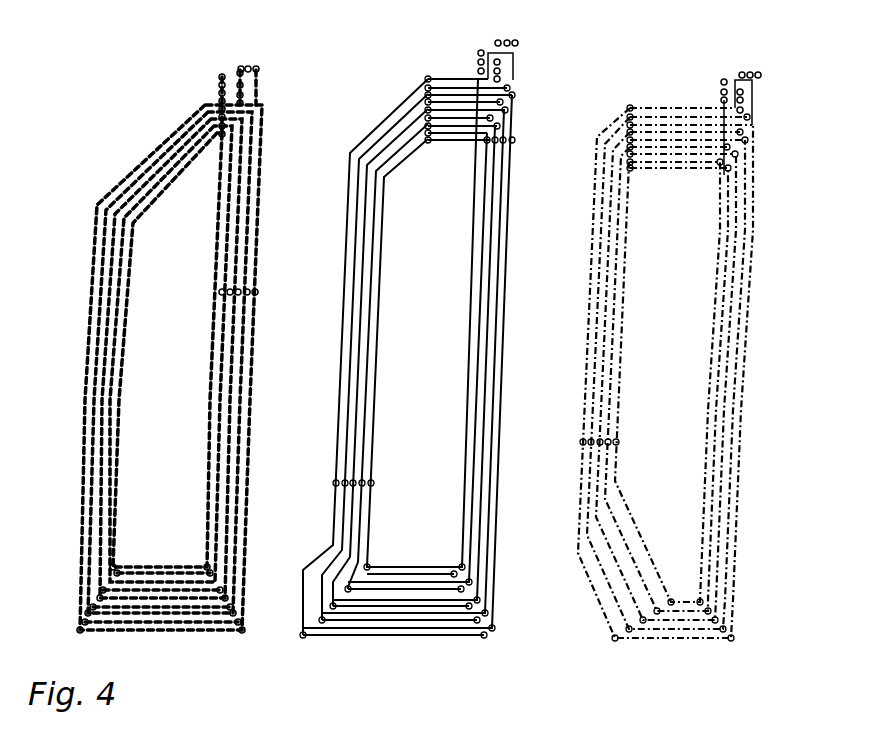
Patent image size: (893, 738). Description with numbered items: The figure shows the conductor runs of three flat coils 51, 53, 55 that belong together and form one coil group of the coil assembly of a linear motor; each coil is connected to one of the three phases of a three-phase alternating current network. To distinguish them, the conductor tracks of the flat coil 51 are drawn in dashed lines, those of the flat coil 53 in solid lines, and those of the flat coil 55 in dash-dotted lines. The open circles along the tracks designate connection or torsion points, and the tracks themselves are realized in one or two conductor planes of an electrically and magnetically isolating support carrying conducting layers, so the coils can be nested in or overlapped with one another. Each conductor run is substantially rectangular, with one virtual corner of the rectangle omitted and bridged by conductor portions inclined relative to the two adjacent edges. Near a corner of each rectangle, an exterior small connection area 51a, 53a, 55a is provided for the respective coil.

The flat coil 51 is at (201, 53).
The exterior small connection area 51a is at (254, 56).
The flat coil 53 is at (404, 58).
The exterior small connection area 53a is at (536, 55).
The flat coil 55 is at (658, 63).
The exterior small connection area 55a is at (780, 76).